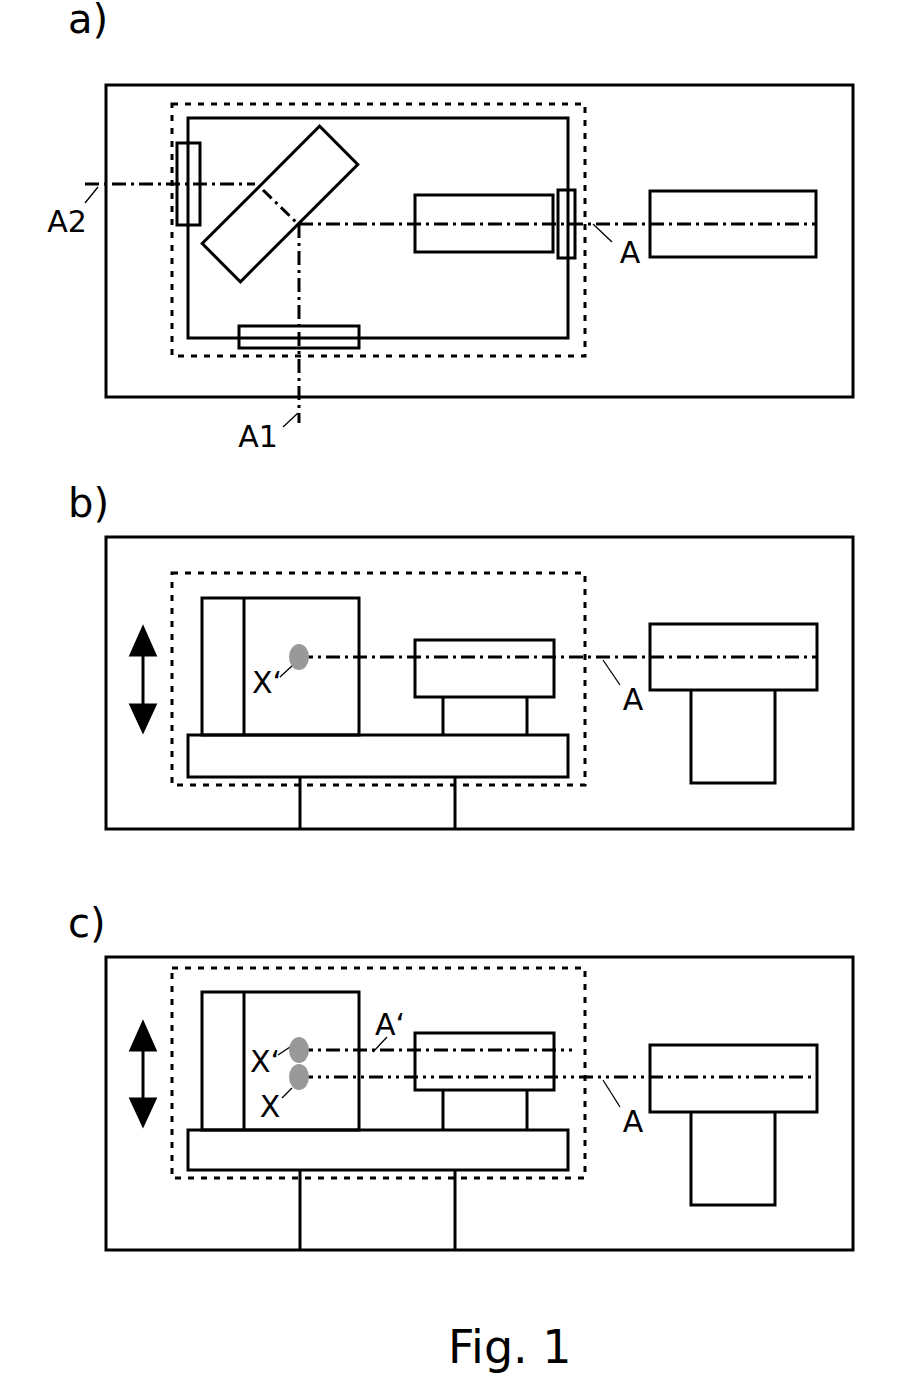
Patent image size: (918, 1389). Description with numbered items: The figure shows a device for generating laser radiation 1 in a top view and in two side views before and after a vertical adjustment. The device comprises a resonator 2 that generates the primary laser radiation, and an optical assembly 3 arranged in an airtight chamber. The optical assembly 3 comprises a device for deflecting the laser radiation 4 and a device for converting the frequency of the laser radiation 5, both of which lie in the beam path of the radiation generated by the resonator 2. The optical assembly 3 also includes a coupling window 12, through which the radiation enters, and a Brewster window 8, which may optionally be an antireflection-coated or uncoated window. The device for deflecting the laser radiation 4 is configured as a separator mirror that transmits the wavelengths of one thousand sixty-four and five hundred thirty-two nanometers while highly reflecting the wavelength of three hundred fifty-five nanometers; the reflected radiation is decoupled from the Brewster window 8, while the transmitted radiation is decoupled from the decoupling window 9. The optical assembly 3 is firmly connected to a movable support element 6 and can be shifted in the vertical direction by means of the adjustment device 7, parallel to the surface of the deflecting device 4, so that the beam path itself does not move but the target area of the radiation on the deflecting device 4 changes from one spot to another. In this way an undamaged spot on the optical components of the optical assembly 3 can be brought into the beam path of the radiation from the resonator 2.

The device for generating laser radiation 1 is at (479, 625).
The resonator 2 is at (710, 257).
The optical assembly 3 is at (585, 332).
The device for deflecting the laser radiation 4 is at (280, 628).
The device for converting the frequency of the laser radiation 5 is at (487, 252).
The movable support element 6 is at (378, 644).
The adjustment device 7 is at (377, 1013).
The Brewster window 8 is at (313, 326).
The decoupling window 9 is at (175, 217).
The coupling window 12 is at (575, 190).